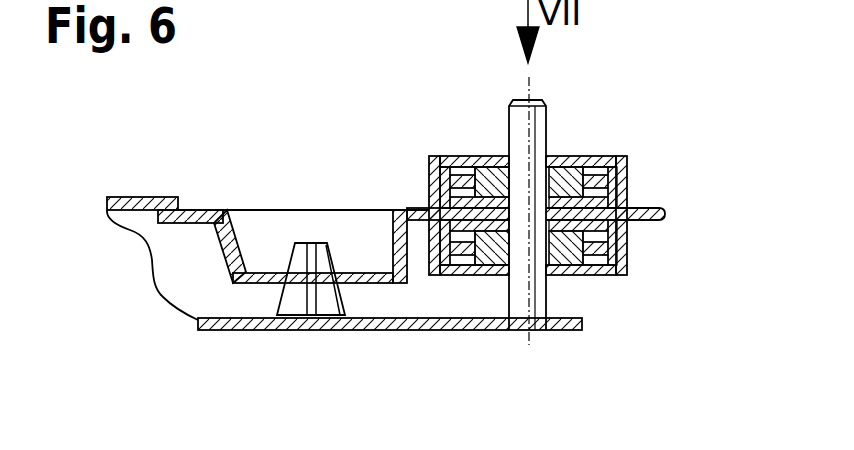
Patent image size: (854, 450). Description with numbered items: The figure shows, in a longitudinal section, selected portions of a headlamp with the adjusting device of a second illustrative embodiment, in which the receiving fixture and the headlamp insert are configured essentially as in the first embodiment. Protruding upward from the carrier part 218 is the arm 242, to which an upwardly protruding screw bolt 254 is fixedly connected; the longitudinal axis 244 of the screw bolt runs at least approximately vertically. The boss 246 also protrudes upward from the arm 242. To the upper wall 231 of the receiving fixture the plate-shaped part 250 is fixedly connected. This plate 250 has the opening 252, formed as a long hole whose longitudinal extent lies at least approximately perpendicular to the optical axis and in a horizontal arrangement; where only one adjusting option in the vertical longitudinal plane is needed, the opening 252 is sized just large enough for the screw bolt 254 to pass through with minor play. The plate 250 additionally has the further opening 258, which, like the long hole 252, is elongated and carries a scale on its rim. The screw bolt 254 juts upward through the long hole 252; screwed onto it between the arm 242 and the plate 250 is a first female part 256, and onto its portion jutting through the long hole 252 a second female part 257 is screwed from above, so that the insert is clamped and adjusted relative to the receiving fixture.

The carrier part 218 is at (222, 333).
The upper wall 231 is at (133, 198).
The arm 242 is at (357, 330).
The longitudinal axis 244 is at (525, 90).
The boss 246 is at (327, 258).
The plate-shaped part 250 is at (665, 213).
The opening 252 is at (551, 192).
The screw bolt 254 is at (560, 293).
The first female part 256 is at (623, 248).
The second female part 257 is at (620, 158).
The further opening 258 is at (255, 279).